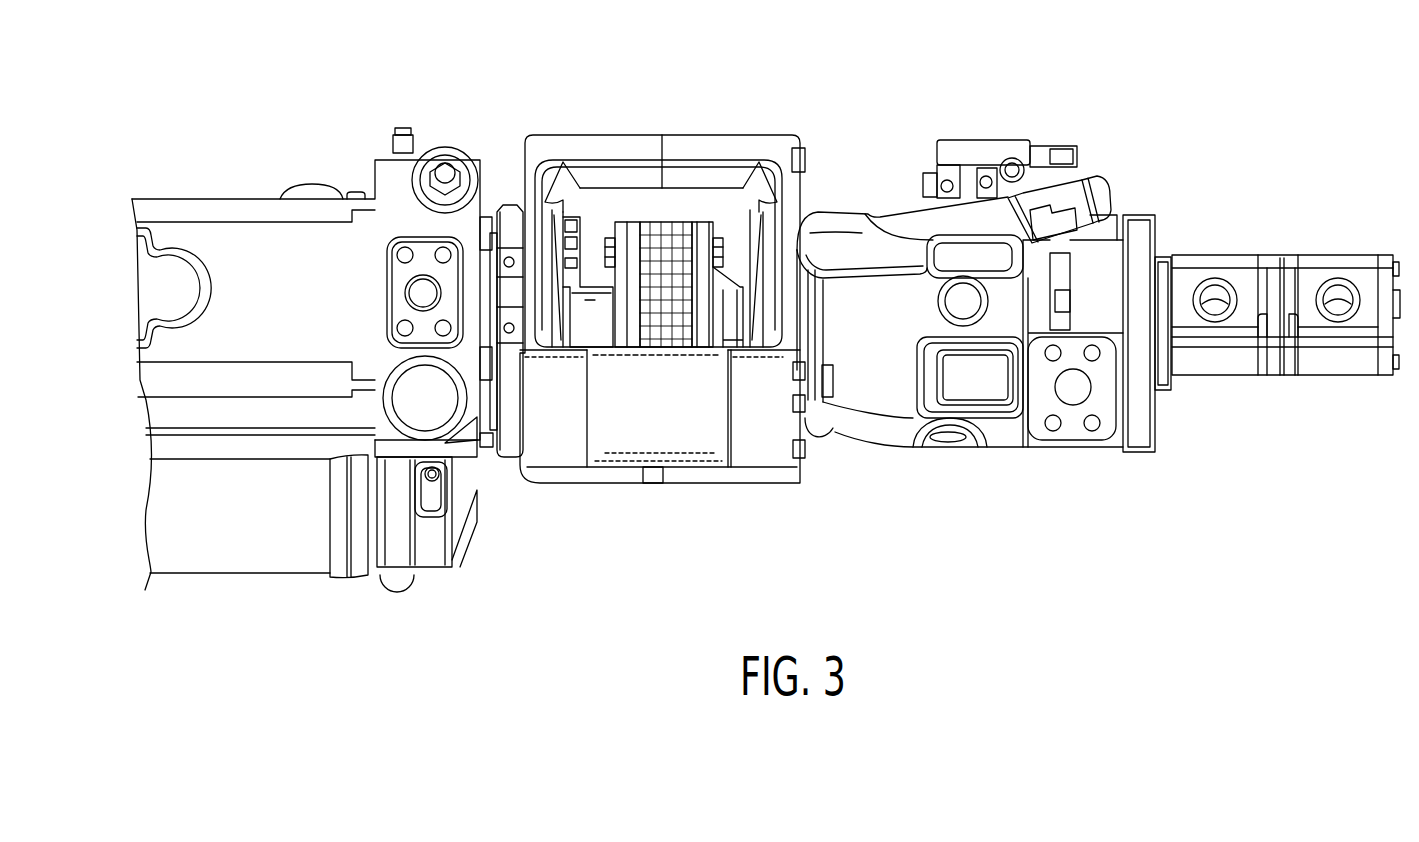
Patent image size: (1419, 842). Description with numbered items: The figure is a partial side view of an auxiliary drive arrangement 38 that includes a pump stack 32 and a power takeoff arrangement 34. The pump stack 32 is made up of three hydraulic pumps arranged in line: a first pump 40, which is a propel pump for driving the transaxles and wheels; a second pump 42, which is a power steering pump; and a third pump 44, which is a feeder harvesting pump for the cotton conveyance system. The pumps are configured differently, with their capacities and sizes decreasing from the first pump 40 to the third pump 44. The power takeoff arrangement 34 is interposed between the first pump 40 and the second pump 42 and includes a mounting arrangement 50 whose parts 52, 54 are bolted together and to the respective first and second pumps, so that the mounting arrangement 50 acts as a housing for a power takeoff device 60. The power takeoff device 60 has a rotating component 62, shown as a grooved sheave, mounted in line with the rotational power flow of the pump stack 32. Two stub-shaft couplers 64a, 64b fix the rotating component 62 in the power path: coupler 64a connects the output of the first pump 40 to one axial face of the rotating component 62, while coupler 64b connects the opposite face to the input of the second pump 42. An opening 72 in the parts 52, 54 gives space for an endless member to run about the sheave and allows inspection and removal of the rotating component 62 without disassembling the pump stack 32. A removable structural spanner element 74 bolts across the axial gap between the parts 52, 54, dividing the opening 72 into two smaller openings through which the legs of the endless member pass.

The pump stack 32 is at (1277, 299).
The power takeoff arrangement 34 is at (646, 298).
The auxiliary drive arrangement 38 is at (827, 54).
The first pump 40 is at (249, 222).
The second pump 42 is at (862, 221).
The third pump 44 is at (1245, 262).
The mounting arrangement 50 is at (802, 184).
The part 52 is at (598, 143).
The part 54 is at (740, 146).
The power takeoff device 60 is at (677, 216).
The rotating component 62 is at (634, 226).
The coupler 64a is at (600, 348).
The coupler 64b is at (740, 352).
The opening 72 is at (542, 201).
The structural spanner element 74 is at (645, 447).